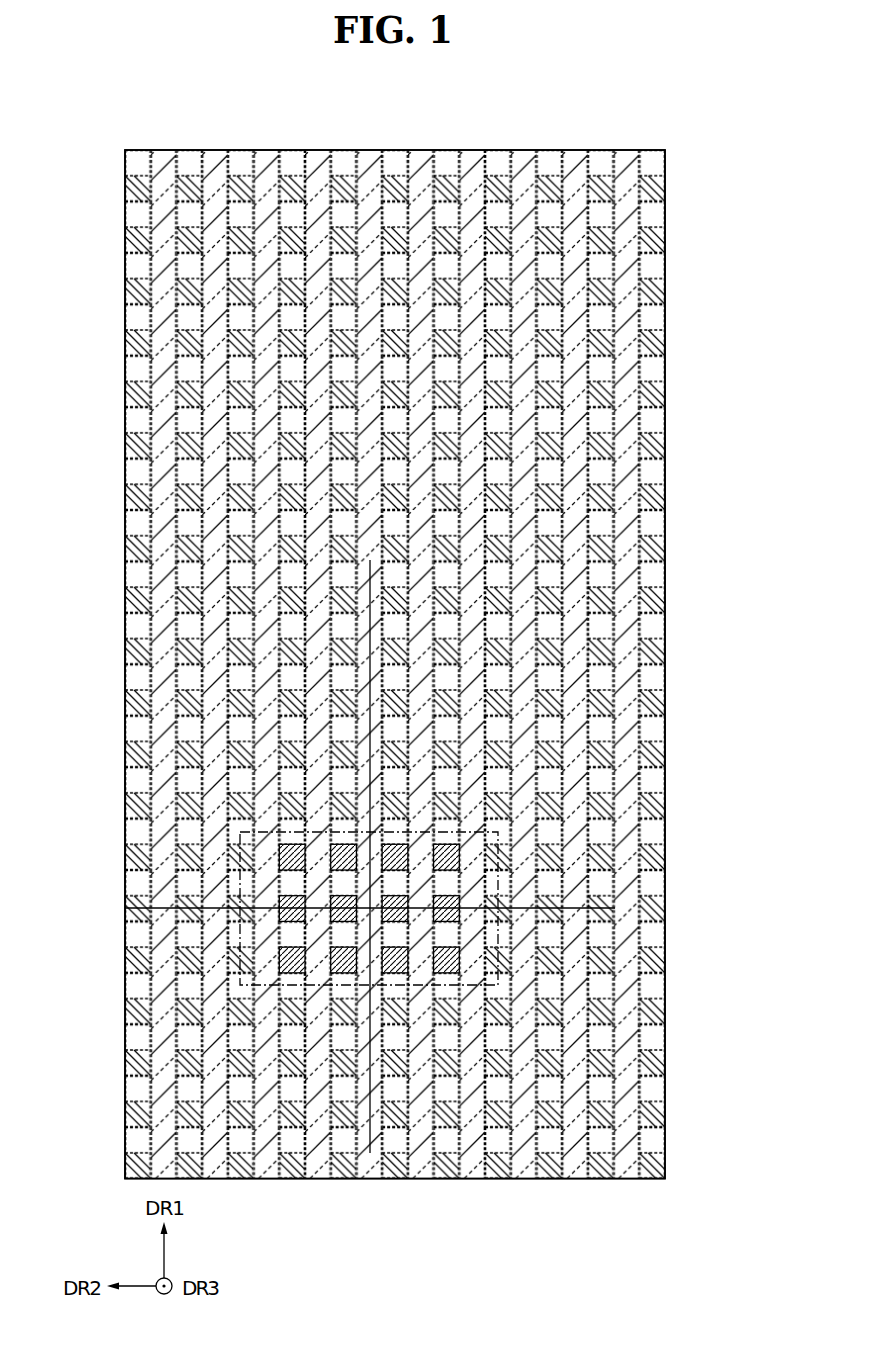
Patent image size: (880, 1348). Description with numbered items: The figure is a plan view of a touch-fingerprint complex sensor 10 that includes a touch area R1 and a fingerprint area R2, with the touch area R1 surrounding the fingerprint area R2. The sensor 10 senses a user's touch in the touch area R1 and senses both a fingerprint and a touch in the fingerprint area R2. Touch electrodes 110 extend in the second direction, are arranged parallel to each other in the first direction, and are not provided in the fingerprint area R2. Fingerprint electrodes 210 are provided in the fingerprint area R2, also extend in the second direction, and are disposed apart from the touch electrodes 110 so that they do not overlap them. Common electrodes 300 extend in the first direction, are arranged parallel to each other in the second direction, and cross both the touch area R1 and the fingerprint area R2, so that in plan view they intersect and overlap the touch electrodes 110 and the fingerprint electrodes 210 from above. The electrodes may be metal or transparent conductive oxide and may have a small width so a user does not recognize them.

The touch-fingerprint complex sensor 10 is at (385, 636).
The touch electrodes 110 is at (143, 907).
The fingerprint electrodes 210 is at (290, 900).
The common electrodes 300 is at (160, 777).
The touch area R1 is at (665, 935).
The fingerprint area R2 is at (470, 986).